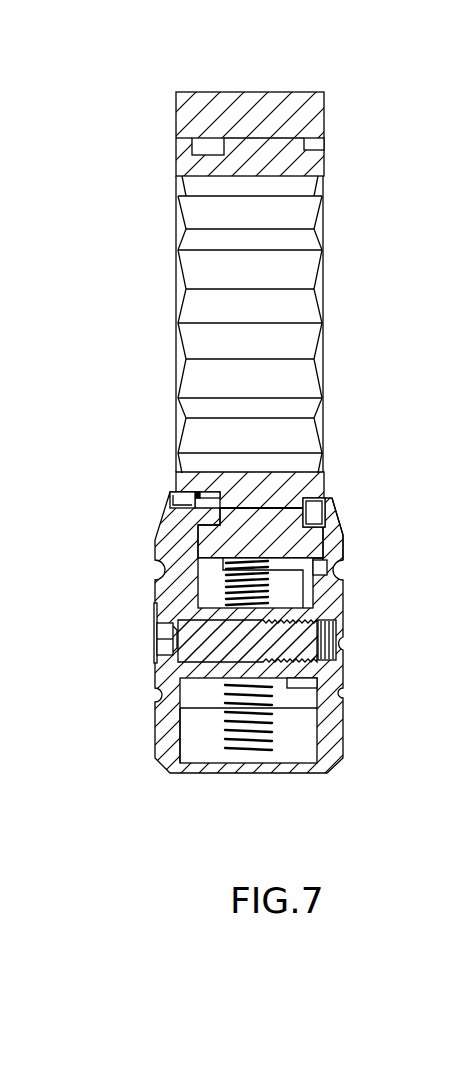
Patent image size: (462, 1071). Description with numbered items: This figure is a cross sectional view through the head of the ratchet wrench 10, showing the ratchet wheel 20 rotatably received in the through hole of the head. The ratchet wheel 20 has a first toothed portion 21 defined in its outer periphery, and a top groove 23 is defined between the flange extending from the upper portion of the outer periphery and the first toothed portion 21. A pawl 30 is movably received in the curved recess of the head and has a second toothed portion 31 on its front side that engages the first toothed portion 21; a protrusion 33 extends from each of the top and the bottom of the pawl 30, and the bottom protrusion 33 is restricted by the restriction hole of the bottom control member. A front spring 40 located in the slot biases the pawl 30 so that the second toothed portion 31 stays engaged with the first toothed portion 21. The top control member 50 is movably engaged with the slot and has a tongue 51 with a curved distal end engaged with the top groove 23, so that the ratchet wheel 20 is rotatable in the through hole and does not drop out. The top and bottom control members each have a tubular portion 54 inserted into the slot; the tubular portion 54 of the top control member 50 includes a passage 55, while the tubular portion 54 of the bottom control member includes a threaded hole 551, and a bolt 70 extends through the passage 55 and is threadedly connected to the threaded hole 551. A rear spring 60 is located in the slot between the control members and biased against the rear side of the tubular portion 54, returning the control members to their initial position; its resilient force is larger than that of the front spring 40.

The ratchet wrench 10 is at (245, 100).
The ratchet wheel 20 is at (176, 220).
The first toothed portion 21 is at (288, 483).
The top groove 23 is at (194, 497).
The pawl 30 is at (247, 537).
The second toothed portion 31 is at (287, 527).
The protrusion 33 is at (319, 538).
The front spring 40 is at (232, 584).
The top control member 50 is at (162, 715).
The tongue 51 is at (185, 494).
The tubular portion 54 is at (298, 677).
The passage 55 is at (220, 665).
The threaded hole 551 is at (312, 618).
The rear spring 60 is at (240, 735).
The bolt 70 is at (156, 645).